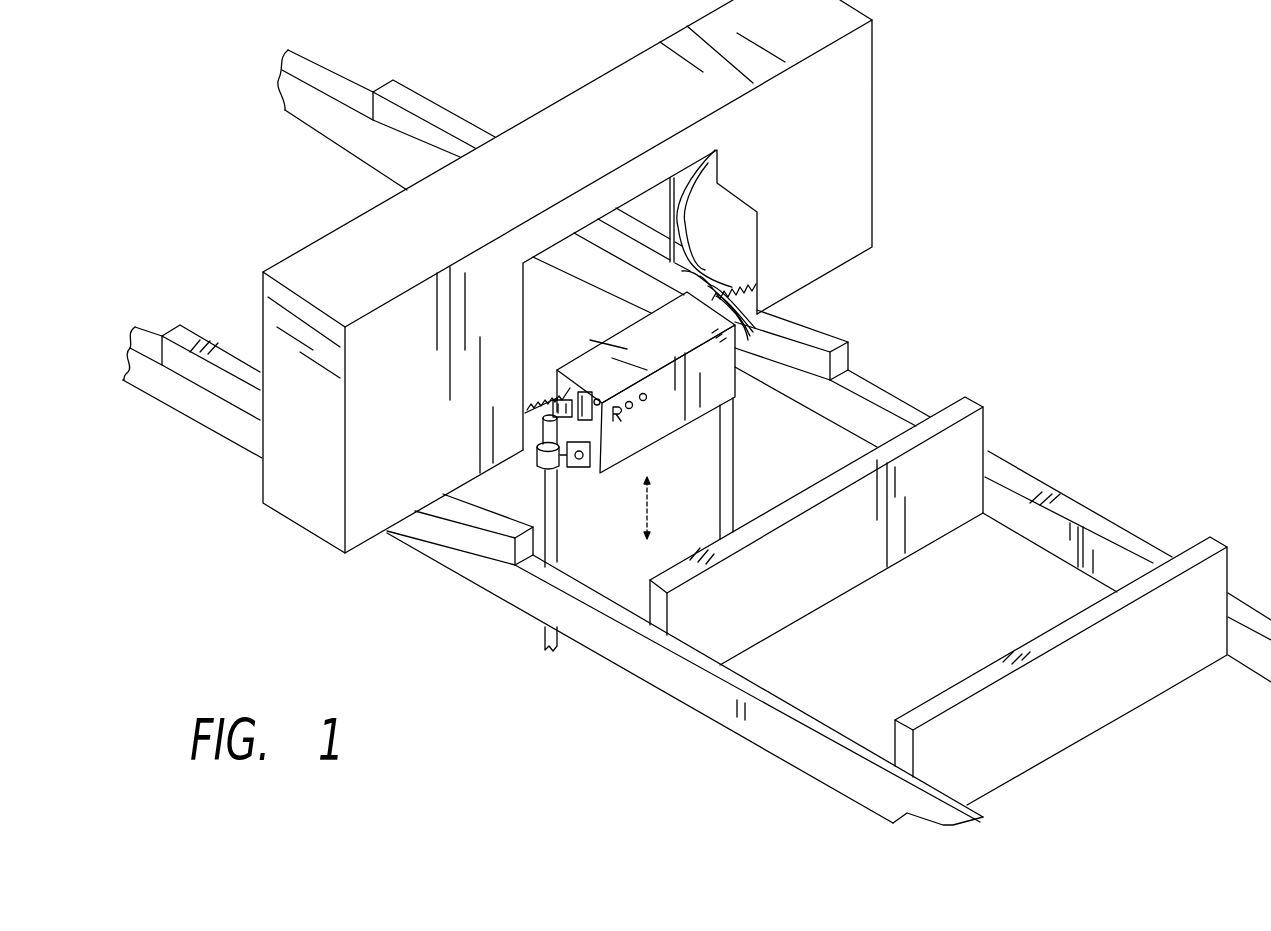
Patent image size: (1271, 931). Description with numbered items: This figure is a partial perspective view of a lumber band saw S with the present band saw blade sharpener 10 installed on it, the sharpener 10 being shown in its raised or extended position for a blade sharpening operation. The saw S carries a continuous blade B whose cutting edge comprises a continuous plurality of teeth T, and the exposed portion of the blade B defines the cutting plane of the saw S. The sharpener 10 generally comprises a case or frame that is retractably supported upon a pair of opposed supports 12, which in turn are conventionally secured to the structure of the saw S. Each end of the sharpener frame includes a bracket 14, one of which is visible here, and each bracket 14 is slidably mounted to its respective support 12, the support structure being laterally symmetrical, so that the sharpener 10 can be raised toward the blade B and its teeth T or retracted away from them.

The sharpener 10 is at (588, 334).
The supports 12 is at (738, 456).
The bracket 14 is at (541, 466).
The blade B is at (682, 271).
The teeth T is at (791, 345).
The band saw S is at (311, 597).